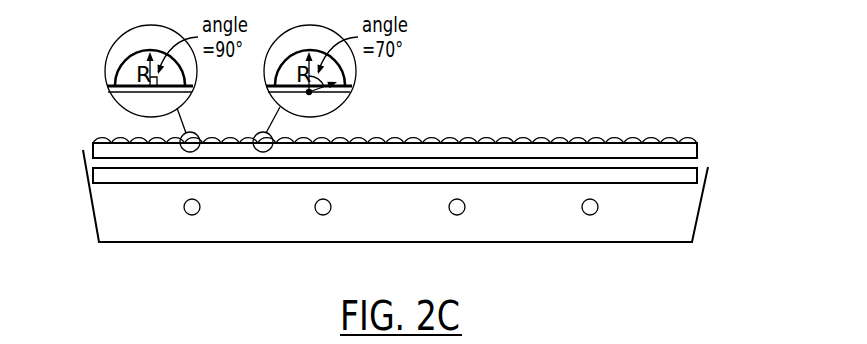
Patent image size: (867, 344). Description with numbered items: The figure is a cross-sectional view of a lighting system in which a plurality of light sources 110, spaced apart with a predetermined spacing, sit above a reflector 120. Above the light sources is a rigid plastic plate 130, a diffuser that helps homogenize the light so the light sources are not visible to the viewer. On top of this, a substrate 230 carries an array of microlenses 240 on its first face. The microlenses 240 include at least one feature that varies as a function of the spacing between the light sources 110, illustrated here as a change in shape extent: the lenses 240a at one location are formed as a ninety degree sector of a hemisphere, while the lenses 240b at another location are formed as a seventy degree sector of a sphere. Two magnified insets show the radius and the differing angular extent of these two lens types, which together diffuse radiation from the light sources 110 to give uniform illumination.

The light sources 110 is at (199, 212).
The reflector 120 is at (672, 256).
The rigid plastic plate 130 is at (633, 173).
The substrate 230 is at (98, 150).
The microlenses 240 is at (656, 126).
The first set of microlenses 240a is at (180, 150).
The second set of microlenses 240b is at (256, 153).